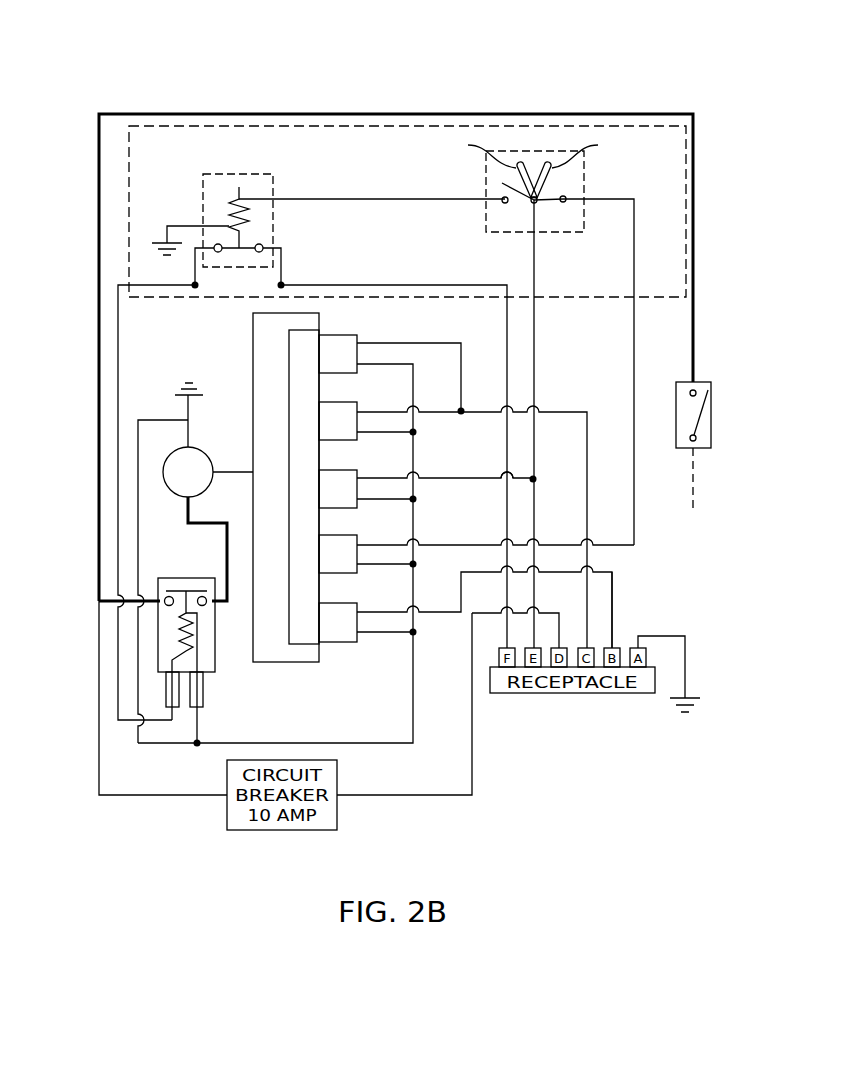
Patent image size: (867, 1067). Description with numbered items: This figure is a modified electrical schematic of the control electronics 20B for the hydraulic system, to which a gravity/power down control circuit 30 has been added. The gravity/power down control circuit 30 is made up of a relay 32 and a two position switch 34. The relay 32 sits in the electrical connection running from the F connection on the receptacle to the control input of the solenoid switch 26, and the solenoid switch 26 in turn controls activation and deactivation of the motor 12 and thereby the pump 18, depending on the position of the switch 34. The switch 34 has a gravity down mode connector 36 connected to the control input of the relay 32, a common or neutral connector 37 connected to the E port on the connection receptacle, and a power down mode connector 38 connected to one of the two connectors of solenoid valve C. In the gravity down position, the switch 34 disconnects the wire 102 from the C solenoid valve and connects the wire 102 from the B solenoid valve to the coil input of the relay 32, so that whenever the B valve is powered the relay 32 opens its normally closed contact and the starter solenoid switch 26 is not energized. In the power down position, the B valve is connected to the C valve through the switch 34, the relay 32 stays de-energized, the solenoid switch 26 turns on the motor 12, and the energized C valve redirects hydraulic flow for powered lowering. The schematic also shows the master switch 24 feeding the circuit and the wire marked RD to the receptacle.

The control electronics 20B is at (130, 94).
The gravity/power down control circuit 30 is at (667, 178).
The relay 32 is at (252, 173).
The two position switch 34 is at (533, 160).
The gravity down mode connector 36 is at (503, 204).
The common connector 37 is at (537, 204).
The power down mode connector 38 is at (566, 202).
The pump 18 is at (265, 355).
The motor 12 is at (172, 483).
The solenoid switch 26 is at (168, 633).
The master switch 24 is at (707, 378).
The wire 102 is at (473, 543).
The red wire RD is at (612, 602).